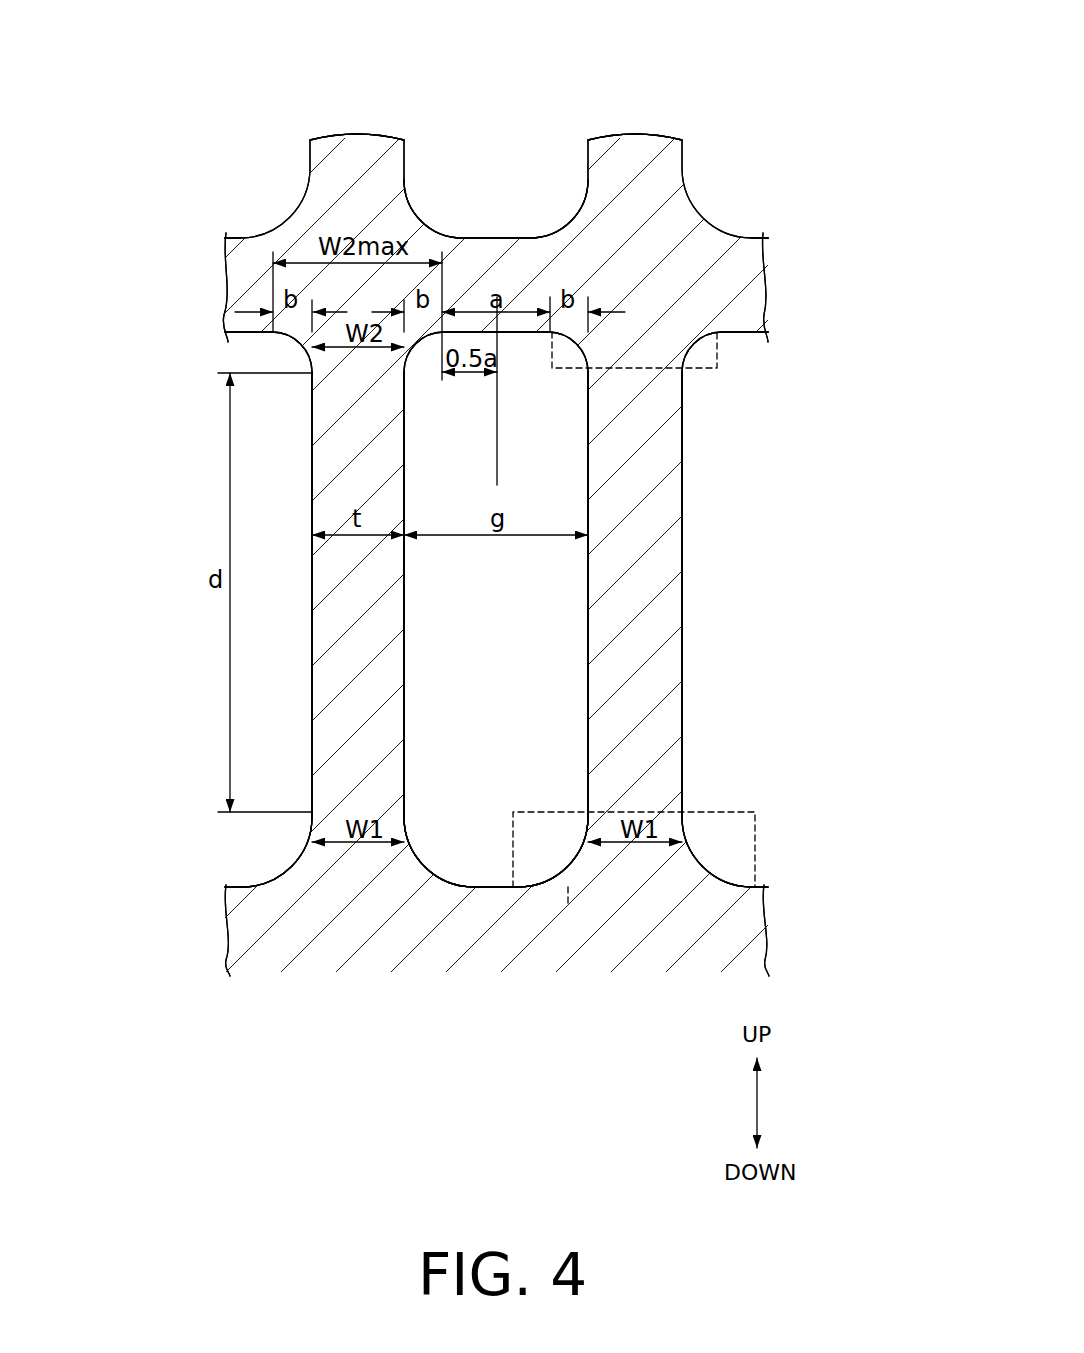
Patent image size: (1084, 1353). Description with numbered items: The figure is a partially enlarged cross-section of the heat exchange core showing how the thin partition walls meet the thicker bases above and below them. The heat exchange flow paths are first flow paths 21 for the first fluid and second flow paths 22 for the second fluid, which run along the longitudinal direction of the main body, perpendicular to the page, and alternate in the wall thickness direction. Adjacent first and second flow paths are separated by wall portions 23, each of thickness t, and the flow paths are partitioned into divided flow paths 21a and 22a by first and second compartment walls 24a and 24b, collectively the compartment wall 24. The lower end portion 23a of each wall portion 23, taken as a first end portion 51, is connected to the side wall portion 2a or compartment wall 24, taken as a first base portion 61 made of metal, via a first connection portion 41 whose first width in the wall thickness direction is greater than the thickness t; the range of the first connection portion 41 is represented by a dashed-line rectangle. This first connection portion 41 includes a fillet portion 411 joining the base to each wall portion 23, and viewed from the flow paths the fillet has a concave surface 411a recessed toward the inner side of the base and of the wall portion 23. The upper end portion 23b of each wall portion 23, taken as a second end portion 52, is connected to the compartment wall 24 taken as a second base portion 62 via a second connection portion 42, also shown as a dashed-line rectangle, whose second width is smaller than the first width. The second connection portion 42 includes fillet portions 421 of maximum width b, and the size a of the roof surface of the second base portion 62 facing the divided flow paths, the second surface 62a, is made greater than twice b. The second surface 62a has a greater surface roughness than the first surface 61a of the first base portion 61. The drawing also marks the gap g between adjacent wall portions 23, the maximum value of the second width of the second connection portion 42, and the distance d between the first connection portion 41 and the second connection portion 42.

The side wall portion 2a is at (597, 947).
The first flow path 21 is at (496, 512).
The divided flow path 21a is at (541, 167).
The second flow path 22 is at (268, 197).
The divided flow path 22a is at (268, 161).
The wall portion 23 is at (385, 722).
The end portion 23a is at (366, 200).
The end portion 23b is at (592, 378).
The compartment wall 24 is at (496, 170).
The first compartment wall 24a is at (520, 272).
The second compartment wall 24b is at (226, 285).
The first connection portion 41 is at (357, 183).
The second connection portion 42 is at (640, 332).
The first end portion 51 is at (592, 430).
The second end portion 52 is at (701, 594).
The first base portion 61 is at (535, 537).
The first surface 61a is at (228, 884).
The second base portion 62 is at (569, 170).
The second surface 62a is at (228, 352).
The fillet portion 411 is at (263, 868).
The concave surface 411a is at (300, 840).
The fillet portion 421 is at (292, 346).